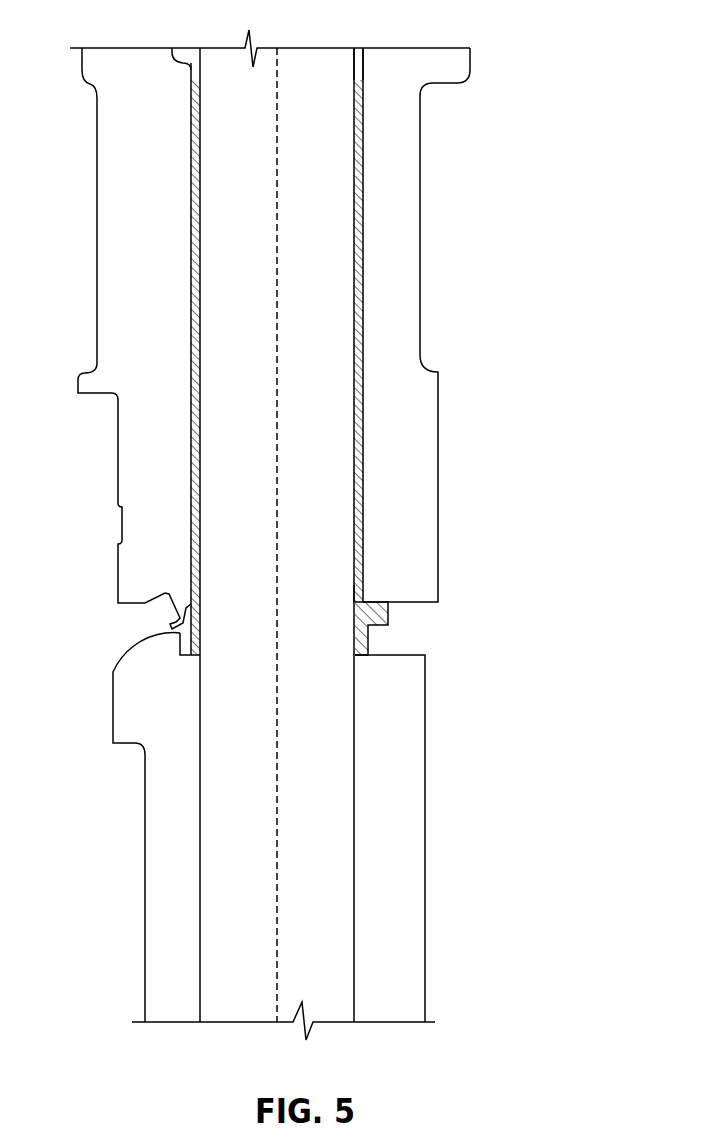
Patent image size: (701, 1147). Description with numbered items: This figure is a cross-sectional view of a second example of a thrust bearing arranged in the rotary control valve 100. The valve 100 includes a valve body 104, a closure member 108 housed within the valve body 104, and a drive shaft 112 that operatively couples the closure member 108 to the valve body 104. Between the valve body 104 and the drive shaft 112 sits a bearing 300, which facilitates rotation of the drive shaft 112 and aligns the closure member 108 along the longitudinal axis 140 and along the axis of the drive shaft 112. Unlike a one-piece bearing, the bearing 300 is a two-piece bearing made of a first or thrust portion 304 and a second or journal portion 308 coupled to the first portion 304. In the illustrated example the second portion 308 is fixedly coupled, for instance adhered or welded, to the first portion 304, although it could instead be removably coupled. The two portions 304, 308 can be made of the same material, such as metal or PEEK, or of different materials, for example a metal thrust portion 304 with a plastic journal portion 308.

The rotary control valve 100 is at (351, 520).
The valve body 104 is at (430, 312).
The closure member 108 is at (436, 860).
The drive shaft 112 is at (372, 54).
The longitudinal axis 140 is at (323, 511).
The bearing 300 is at (344, 599).
The first or thrust portion 304 is at (400, 624).
The second or journal portion 308 is at (370, 318).